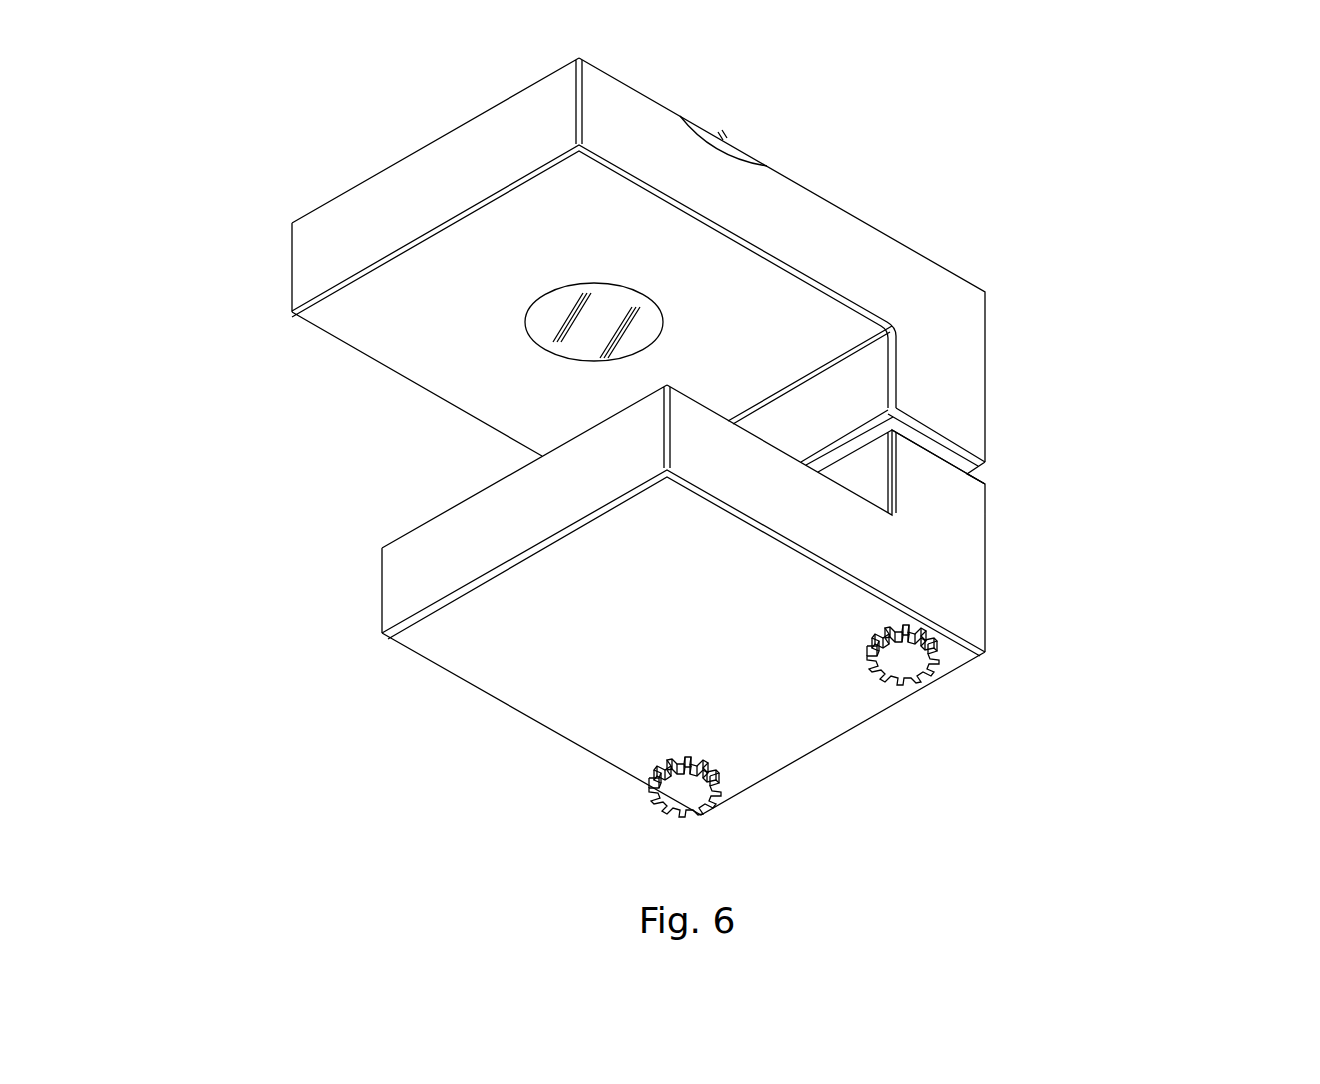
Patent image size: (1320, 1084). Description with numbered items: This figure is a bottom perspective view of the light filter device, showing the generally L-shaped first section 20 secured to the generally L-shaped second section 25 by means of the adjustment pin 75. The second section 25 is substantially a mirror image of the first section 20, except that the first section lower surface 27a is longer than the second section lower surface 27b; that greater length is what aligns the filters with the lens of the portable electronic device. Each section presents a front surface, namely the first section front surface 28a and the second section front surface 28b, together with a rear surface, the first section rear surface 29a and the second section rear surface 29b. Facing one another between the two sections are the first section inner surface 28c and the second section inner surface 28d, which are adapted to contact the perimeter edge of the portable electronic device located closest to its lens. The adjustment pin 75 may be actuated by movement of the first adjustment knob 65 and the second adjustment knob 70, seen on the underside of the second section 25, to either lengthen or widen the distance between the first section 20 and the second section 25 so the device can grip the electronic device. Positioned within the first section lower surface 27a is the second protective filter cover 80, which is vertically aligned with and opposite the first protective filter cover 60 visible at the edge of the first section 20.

The first section 20 is at (656, 271).
The second section 25 is at (755, 567).
The first section lower surface 27a is at (415, 335).
The second section lower surface 27b is at (452, 637).
The first section front surface 28a is at (322, 243).
The second section front surface 28b is at (393, 570).
The first section inner surface 28c is at (863, 378).
The second section inner surface 28d is at (877, 485).
The first section rear surface 29a is at (878, 268).
The second section rear surface 29b is at (952, 537).
The first protective filter cover 60 is at (727, 140).
The first adjustment knob 65 is at (688, 799).
The second adjustment knob 70 is at (907, 662).
The adjustment pin 75 is at (925, 448).
The second protective filter cover 80 is at (627, 315).